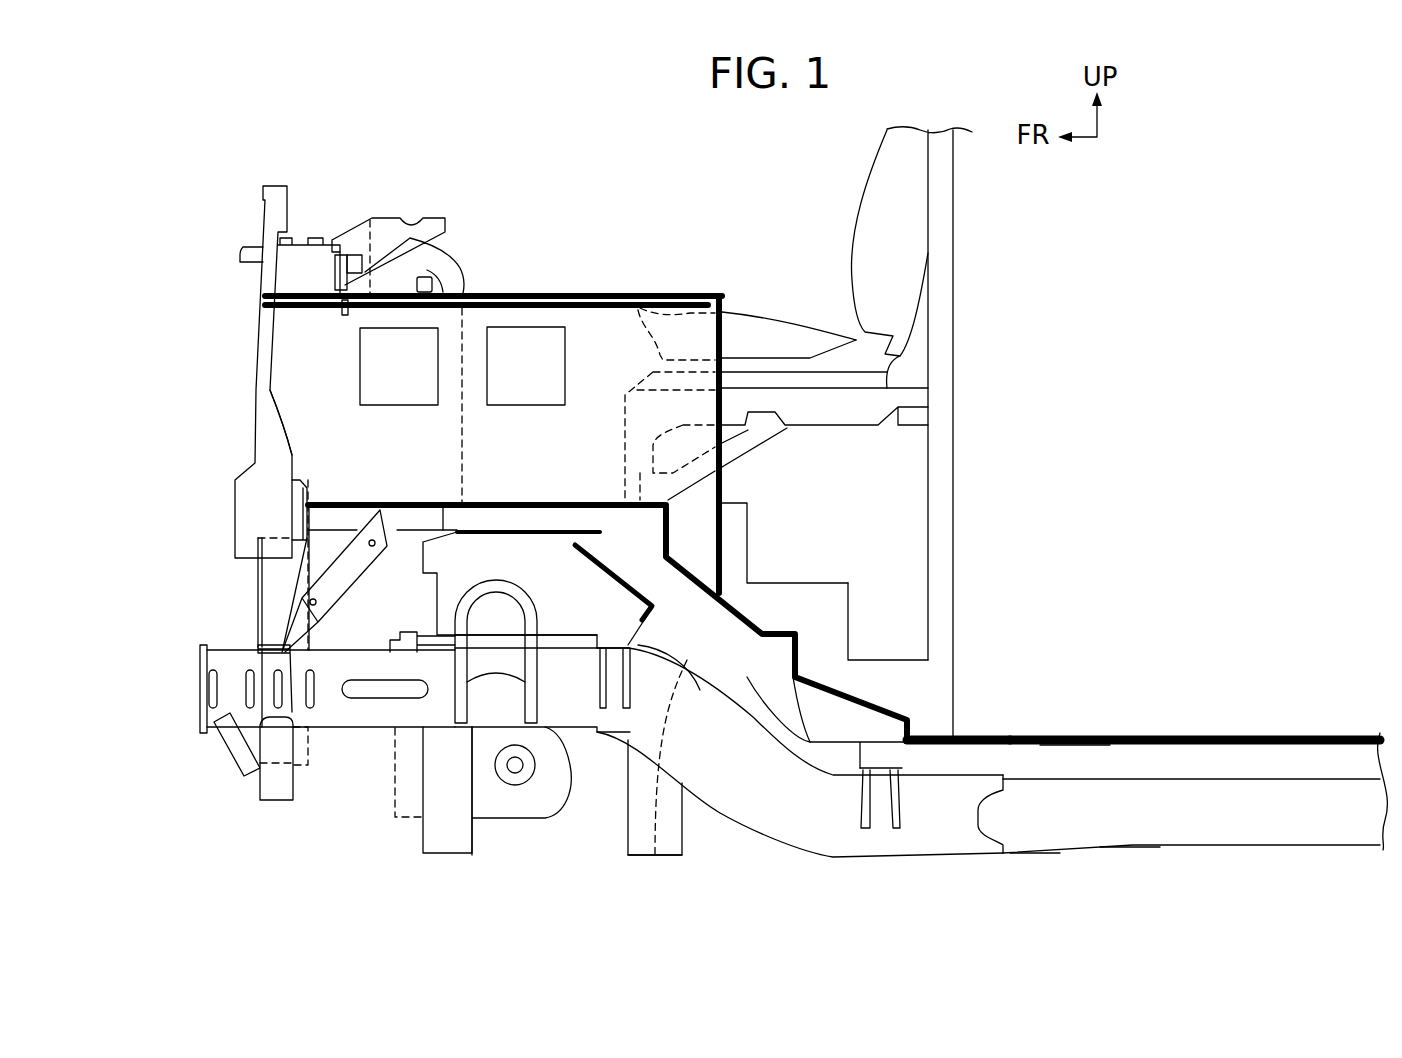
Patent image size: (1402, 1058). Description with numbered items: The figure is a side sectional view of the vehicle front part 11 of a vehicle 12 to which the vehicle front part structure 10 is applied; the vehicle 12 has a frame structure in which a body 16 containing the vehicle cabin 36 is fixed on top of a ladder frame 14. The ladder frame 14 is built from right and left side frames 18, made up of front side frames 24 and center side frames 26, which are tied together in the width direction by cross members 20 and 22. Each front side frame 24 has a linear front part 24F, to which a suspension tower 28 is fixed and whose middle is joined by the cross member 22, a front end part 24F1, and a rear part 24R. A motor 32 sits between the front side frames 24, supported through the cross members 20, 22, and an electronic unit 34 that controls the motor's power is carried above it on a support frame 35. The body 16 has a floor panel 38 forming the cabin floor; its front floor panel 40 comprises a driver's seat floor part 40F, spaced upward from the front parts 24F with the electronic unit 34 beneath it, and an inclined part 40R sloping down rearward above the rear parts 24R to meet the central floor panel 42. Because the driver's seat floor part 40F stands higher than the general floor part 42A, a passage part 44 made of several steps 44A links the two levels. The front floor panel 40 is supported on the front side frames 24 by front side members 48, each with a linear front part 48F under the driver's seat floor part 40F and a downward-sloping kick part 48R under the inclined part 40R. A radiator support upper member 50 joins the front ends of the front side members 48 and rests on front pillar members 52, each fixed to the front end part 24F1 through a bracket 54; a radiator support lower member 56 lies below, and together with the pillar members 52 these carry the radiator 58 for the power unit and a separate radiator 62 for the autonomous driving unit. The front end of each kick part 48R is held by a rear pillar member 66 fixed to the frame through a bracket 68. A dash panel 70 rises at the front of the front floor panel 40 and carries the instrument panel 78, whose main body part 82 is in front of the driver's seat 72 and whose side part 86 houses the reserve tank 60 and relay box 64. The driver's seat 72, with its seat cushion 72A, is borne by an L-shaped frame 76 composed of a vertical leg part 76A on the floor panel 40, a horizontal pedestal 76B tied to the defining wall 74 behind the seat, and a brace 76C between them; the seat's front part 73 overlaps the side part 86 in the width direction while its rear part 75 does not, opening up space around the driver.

The vehicle front part structure 10 is at (270, 139).
The vehicle front part 11 is at (690, 200).
The vehicle 12 is at (386, 142).
The ladder frame 14 is at (1027, 872).
The body 16 is at (240, 434).
The side frame 18 is at (1130, 848).
The cross member 20 is at (447, 840).
The cross member 22 is at (668, 848).
The front side frame 24 is at (612, 745).
The front part of front side frame 24F is at (358, 717).
The front end part of front side frame 24F1 is at (262, 772).
The rear part of front side frame 24R is at (757, 803).
The center side frame 26 is at (1278, 838).
The suspension tower 28 is at (455, 698).
The motor 32 is at (515, 800).
The electronic unit 34 is at (449, 560).
The support frame 35 is at (403, 632).
The vehicle cabin 36 is at (1015, 225).
The floor panel 38 is at (1073, 700).
The front floor panel 40 is at (572, 502).
The driver's seat floor part 40F is at (500, 502).
The inclined part 40R is at (740, 583).
The central floor panel 42 is at (1165, 737).
The general floor part 42A is at (993, 737).
The passage part 44 is at (880, 657).
The step 44A is at (790, 580).
The front side member 48 is at (655, 855).
The front part of front side member 48F is at (556, 530).
The kick part 48R is at (752, 673).
The radiator support upper member 50 is at (305, 490).
The front pillar member 52 is at (270, 580).
The bracket 54 is at (250, 653).
The radiator support lower member 56 is at (268, 785).
The radiator 58 is at (278, 601).
The reserve tank 60 is at (385, 350).
The radiator 62 is at (216, 738).
The relay box 64 is at (537, 343).
The rear pillar member 66 is at (613, 600).
The bracket 68 is at (598, 690).
The dash panel 70 is at (283, 420).
The driver's seat 72 is at (777, 250).
The seat cushion 72A is at (748, 325).
The front part of driver's seat 73 is at (640, 300).
The defining wall 74 is at (950, 333).
The rear part of driver's seat 75 is at (870, 222).
The frame 76 is at (848, 425).
The leg part 76A is at (625, 420).
The pedestal 76B is at (805, 420).
The brace 76C is at (747, 448).
The instrument panel 78 is at (450, 208).
The instrument panel main body part 82 is at (305, 262).
The instrument panel side part 86 is at (785, 322).